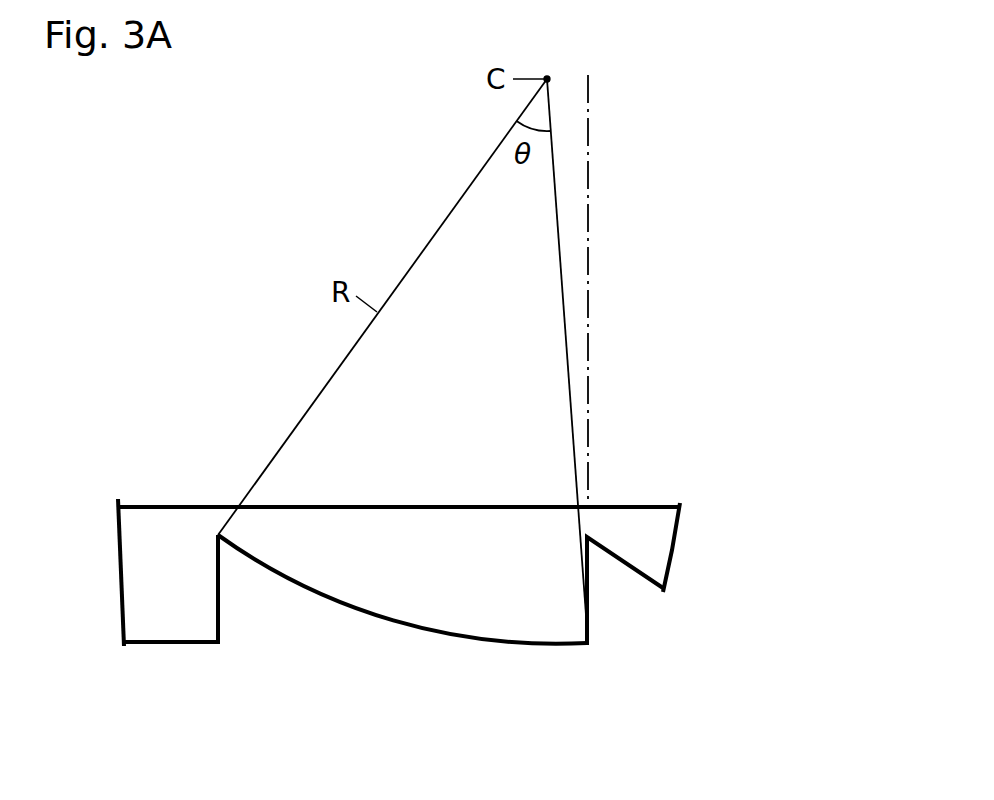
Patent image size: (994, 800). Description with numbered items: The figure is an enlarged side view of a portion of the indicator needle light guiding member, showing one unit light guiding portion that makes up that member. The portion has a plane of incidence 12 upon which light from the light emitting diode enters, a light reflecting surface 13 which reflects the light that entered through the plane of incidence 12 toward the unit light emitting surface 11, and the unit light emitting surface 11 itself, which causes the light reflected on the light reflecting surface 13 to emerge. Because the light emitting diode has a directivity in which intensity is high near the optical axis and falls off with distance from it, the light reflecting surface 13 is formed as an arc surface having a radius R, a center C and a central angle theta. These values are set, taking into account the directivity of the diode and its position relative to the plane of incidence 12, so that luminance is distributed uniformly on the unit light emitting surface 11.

The unit light emitting surface 11 is at (446, 506).
The plane of incidence 12 is at (590, 608).
The light reflecting surface 13 is at (376, 621).